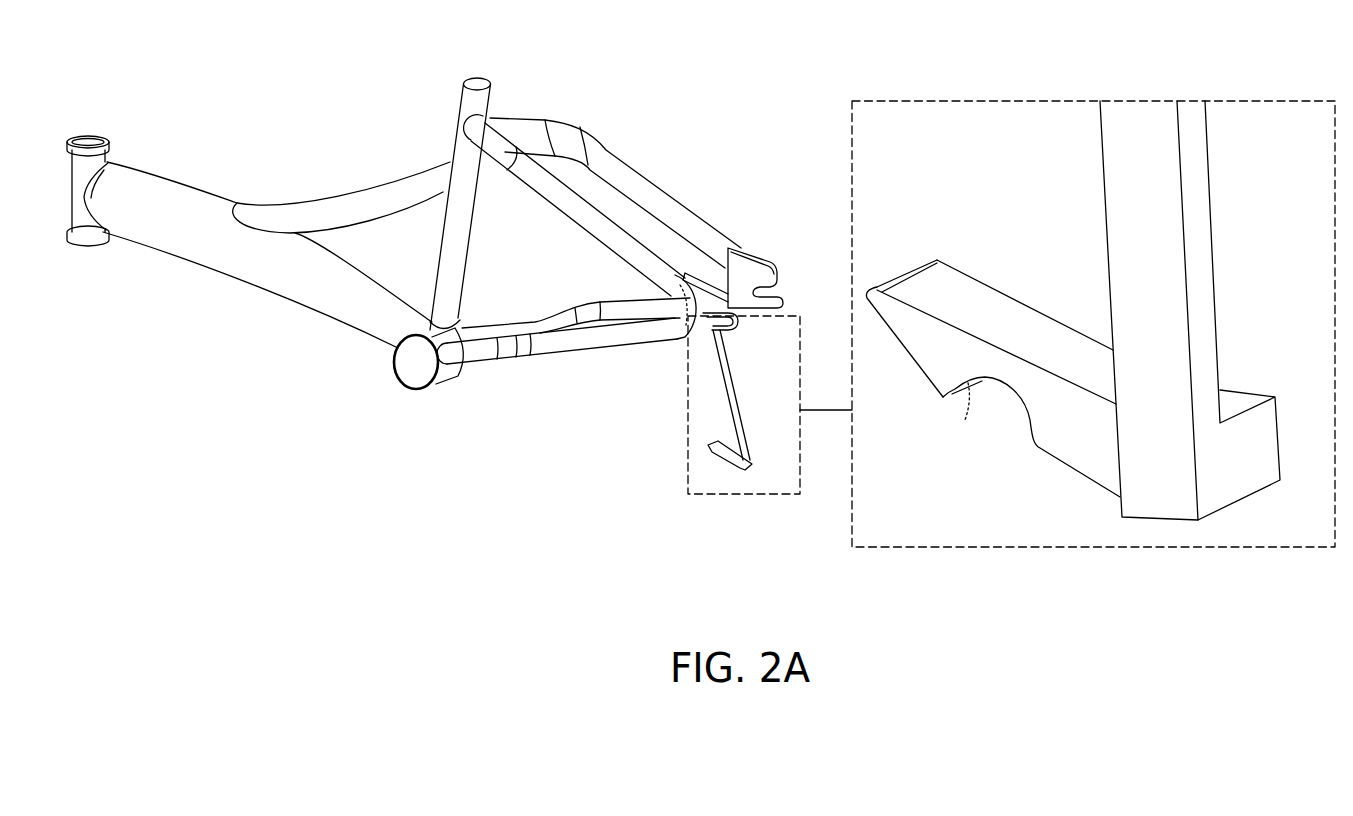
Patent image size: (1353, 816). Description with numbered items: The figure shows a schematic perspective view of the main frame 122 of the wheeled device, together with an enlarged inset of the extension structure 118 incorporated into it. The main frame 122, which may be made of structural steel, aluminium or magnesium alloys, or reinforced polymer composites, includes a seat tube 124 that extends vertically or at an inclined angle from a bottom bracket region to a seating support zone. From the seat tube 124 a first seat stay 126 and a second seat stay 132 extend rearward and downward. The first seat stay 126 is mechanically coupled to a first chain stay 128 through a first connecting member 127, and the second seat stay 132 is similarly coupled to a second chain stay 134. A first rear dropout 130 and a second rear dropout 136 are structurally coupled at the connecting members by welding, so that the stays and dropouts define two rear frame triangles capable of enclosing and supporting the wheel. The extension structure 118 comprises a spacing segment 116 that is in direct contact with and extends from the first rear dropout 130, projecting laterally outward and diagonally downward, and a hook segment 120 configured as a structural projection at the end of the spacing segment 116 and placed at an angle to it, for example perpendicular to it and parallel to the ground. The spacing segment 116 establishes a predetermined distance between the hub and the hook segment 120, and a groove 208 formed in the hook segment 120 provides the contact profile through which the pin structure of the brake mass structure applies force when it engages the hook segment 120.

The spacing segment 116 is at (1210, 178).
The extension structure 118 is at (1147, 125).
The hook segment 120 is at (1097, 482).
The main frame 122 is at (215, 289).
The seat tube 124 is at (460, 102).
The first seat stay 126 is at (523, 170).
The first connecting member 127 is at (674, 335).
The first chain stay 128 is at (486, 357).
The first rear dropout 130 is at (705, 285).
The second seat stay 132 is at (595, 146).
The second chain stay 134 is at (552, 320).
The second rear dropout 136 is at (763, 264).
The groove 208 is at (720, 455).